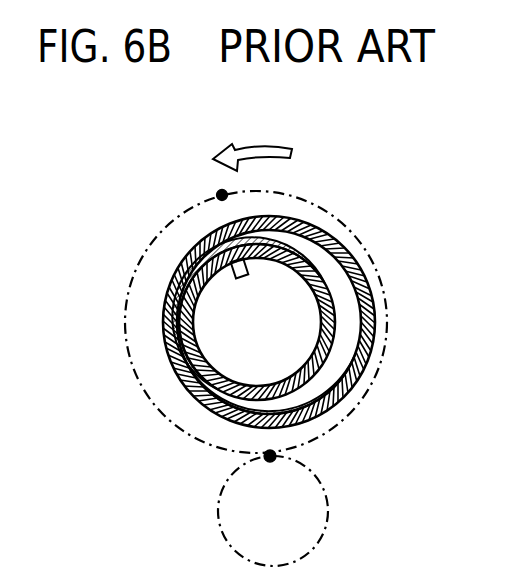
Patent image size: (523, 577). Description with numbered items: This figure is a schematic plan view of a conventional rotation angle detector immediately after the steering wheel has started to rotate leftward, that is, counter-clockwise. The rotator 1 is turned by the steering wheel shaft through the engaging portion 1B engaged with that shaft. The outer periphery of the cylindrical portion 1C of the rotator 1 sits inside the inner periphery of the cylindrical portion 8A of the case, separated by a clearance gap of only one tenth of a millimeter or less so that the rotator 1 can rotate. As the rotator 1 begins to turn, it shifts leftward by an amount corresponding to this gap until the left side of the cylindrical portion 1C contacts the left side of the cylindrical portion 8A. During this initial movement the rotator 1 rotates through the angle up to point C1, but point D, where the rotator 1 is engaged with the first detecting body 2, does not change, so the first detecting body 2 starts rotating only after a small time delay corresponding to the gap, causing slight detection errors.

The rotator 1 is at (385, 360).
The engaging portion 1B is at (248, 266).
The cylindrical portion 1C is at (332, 306).
The cylindrical portion 8A is at (185, 355).
The first detecting body 2 is at (250, 515).
The point C1 is at (218, 194).
The point D is at (275, 458).